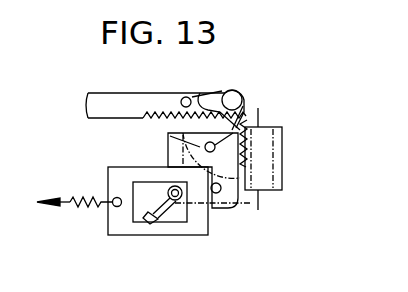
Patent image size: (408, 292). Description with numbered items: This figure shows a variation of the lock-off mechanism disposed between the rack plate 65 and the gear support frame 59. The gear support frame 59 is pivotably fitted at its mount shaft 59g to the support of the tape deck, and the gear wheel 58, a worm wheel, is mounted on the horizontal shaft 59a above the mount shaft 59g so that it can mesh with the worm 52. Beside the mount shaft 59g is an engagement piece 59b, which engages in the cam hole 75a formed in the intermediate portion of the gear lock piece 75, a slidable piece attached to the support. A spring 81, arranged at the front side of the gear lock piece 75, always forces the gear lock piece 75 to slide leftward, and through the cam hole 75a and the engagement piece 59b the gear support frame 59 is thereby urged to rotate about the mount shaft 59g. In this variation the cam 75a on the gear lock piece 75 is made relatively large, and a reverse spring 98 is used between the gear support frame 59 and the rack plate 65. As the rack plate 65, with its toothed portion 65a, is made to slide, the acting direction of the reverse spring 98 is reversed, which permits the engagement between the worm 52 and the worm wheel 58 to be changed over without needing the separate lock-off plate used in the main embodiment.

The rack plate 65 is at (108, 95).
The rack teeth 65a is at (162, 112).
The gear wheel 58 is at (207, 92).
The reverse spring 98 is at (248, 114).
The worm 52 is at (281, 158).
The gear support frame 59 is at (232, 205).
The horizontal shaft 59a is at (168, 138).
The mount shaft 59g is at (216, 206).
The engagement piece 59b is at (188, 200).
The gear lock piece 75 is at (172, 226).
The cam hole 75a is at (152, 220).
The spring 81 is at (84, 210).